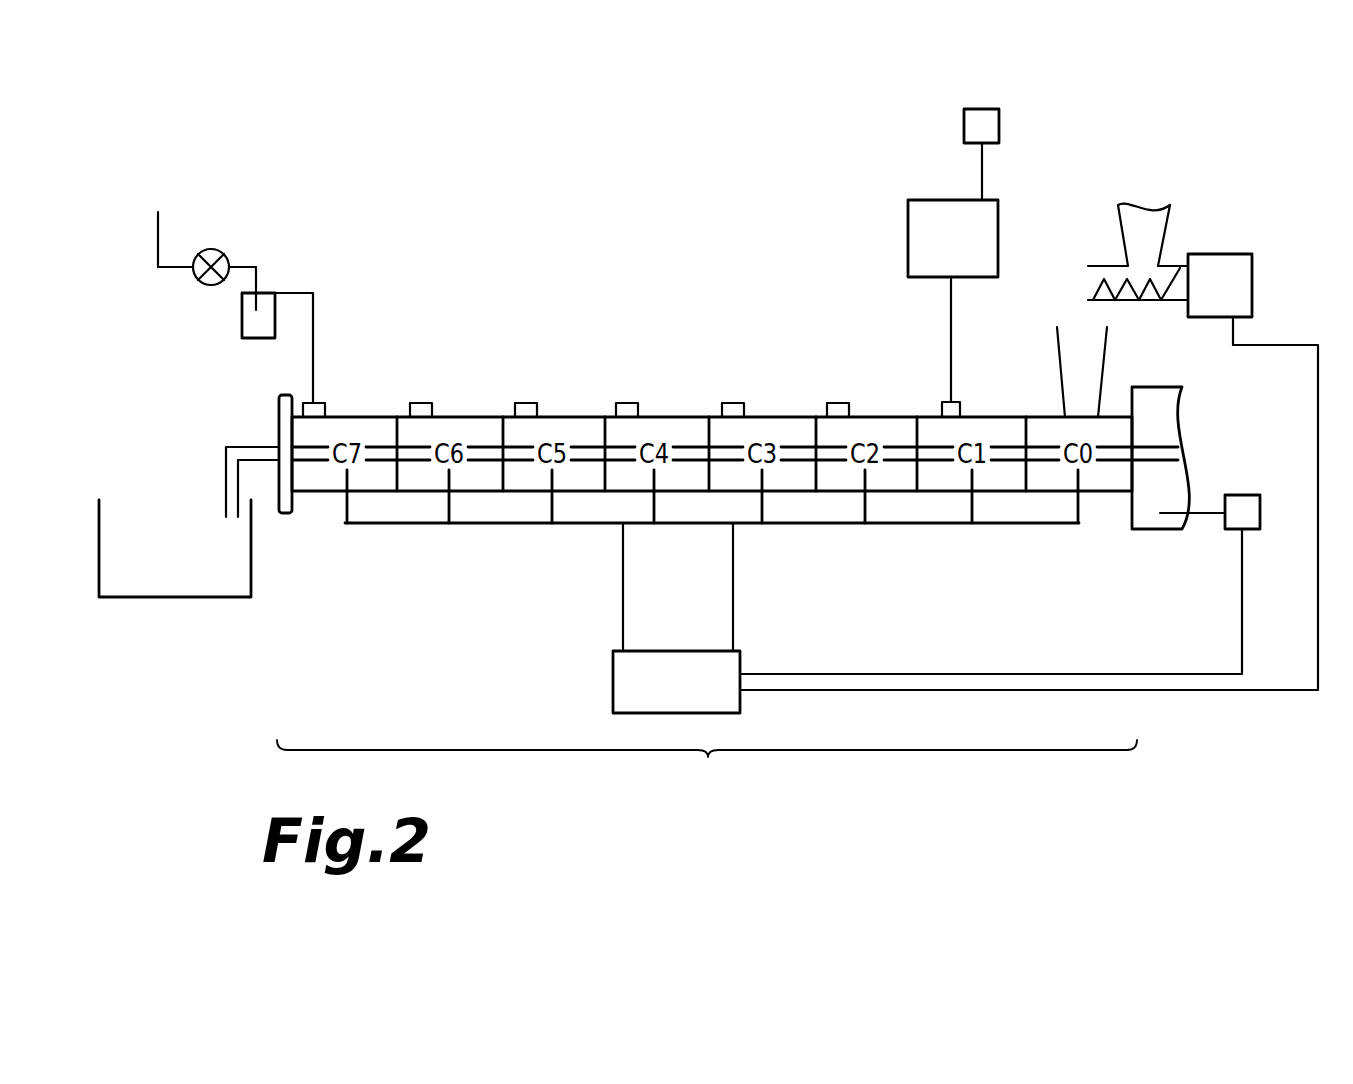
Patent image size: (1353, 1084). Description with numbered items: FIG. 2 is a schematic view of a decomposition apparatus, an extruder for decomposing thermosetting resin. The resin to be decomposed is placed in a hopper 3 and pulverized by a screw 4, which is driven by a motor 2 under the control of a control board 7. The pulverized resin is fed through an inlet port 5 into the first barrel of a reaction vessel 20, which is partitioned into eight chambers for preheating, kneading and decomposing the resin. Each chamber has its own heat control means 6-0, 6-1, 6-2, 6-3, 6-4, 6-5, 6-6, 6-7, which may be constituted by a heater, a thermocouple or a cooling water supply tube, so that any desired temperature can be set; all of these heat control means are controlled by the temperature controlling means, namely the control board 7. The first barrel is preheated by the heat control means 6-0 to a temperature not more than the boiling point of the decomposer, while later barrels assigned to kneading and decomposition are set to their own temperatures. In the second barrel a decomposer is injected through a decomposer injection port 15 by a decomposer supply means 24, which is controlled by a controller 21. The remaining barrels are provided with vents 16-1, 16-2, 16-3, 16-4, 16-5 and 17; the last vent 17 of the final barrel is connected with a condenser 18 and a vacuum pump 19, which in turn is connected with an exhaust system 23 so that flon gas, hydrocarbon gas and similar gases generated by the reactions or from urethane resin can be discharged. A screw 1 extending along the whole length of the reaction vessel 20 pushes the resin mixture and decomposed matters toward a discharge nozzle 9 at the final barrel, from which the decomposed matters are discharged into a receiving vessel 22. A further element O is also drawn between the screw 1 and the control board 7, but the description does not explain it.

The screw 1 is at (1170, 415).
The motor 2 is at (1252, 272).
The hopper 3 is at (1162, 218).
The screw 4 is at (1149, 292).
The inlet port 5 is at (1050, 351).
The control board 7 is at (613, 683).
The discharge nozzle 9 is at (226, 472).
The decomposer injection port 15 is at (947, 401).
The vent 16-1 is at (840, 402).
The vent 16-2 is at (735, 402).
The vent 16-3 is at (629, 402).
The vent 16-4 is at (528, 402).
The vent 16-5 is at (423, 402).
The vent 17 is at (318, 402).
The condenser 18 is at (236, 322).
The vacuum pump 19 is at (211, 249).
The reaction vessel 20 is at (707, 768).
The controller 21 is at (964, 122).
The receiving vessel 22 is at (201, 590).
The exhaust system 23 is at (158, 213).
The decomposer supply means 24 is at (908, 228).
The motor output unit O is at (1244, 495).
The heat control means 6-0 is at (1080, 505).
The heat control means 6-1 is at (974, 505).
The heat control means 6-2 is at (867, 505).
The heat control means 6-3 is at (764, 505).
The heat control means 6-4 is at (656, 505).
The heat control means 6-5 is at (554, 505).
The heat control means 6-6 is at (451, 505).
The heat control means 6-7 is at (349, 505).